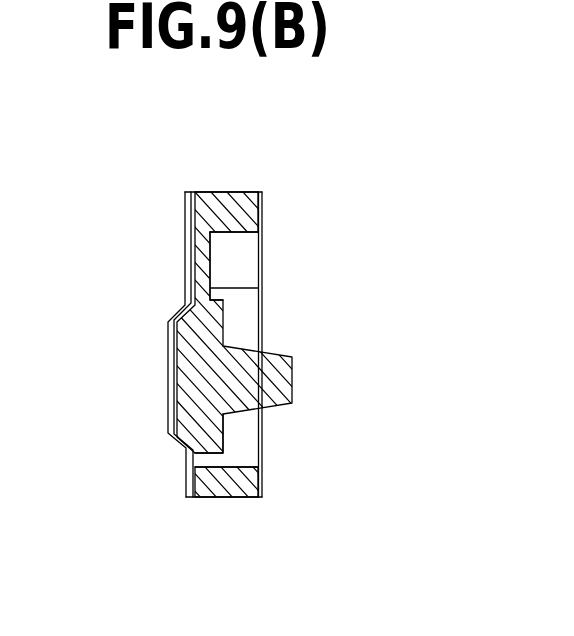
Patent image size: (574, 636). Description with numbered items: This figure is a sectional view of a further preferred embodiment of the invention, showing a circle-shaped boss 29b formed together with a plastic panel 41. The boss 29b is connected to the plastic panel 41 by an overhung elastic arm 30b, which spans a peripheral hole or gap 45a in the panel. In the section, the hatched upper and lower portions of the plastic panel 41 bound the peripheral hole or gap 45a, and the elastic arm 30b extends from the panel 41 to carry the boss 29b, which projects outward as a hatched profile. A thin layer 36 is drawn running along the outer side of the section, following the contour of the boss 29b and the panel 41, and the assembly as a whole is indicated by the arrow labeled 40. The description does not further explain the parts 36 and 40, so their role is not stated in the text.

The plastic panel 41 is at (222, 200).
The thin wall 36 is at (185, 220).
The overhung elastic arm 30b is at (200, 265).
The boss 29b is at (273, 377).
The peripheral hole or gap 45a is at (243, 456).
The member assembly 40 is at (163, 397).